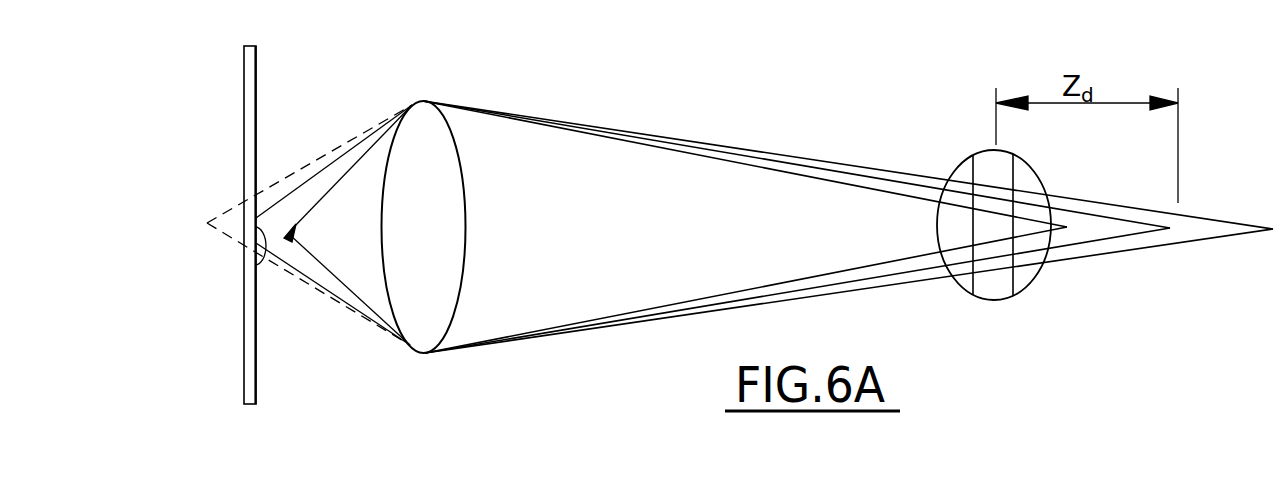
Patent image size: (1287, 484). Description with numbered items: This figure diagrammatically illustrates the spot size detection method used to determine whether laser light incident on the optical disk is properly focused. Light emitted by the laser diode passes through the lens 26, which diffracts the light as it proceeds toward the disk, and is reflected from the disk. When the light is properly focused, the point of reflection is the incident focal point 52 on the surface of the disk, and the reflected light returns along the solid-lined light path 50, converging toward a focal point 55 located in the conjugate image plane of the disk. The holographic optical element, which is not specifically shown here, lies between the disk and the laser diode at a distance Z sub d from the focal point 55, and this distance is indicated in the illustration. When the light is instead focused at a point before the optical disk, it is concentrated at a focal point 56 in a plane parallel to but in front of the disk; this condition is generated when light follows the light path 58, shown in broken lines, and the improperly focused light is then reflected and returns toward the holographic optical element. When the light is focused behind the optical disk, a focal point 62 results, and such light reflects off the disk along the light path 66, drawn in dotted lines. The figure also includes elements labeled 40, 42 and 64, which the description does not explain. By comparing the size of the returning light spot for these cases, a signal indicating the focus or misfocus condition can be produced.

The lens 26 is at (458, 224).
The aperture stripes 40 is at (965, 283).
The aperture lens 42 is at (998, 293).
The light path 50 is at (882, 181).
The incident focal point 52 is at (256, 258).
The focal point 55 is at (1175, 229).
The focal point 56 is at (289, 243).
The light path 58 is at (326, 196).
The focal point 62 is at (207, 223).
The reflected beam 64 is at (258, 193).
The light path 66 is at (838, 163).